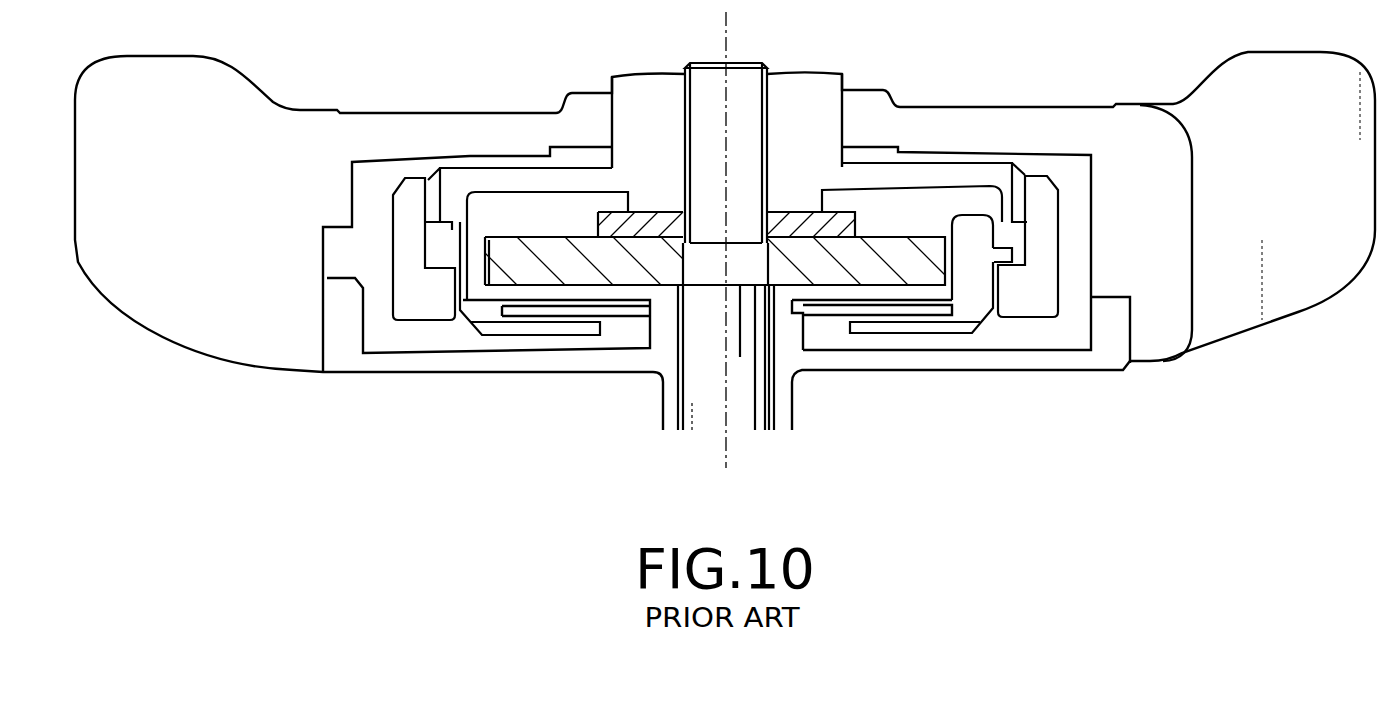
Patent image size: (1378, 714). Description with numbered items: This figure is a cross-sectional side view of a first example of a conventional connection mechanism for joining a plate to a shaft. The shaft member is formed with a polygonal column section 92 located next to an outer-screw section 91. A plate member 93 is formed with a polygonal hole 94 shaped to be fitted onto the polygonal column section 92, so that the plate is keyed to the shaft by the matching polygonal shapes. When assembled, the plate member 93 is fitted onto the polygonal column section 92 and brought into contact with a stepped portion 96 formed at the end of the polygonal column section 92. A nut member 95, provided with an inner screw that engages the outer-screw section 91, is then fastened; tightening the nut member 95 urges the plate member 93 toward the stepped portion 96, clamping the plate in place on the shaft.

The outer-screw section 91 is at (688, 222).
The polygonal column section 92 is at (712, 257).
The plate member 93 is at (915, 272).
The polygonal hole 94 is at (678, 284).
The nut member 95 is at (832, 214).
The stepped portion 96 is at (773, 280).